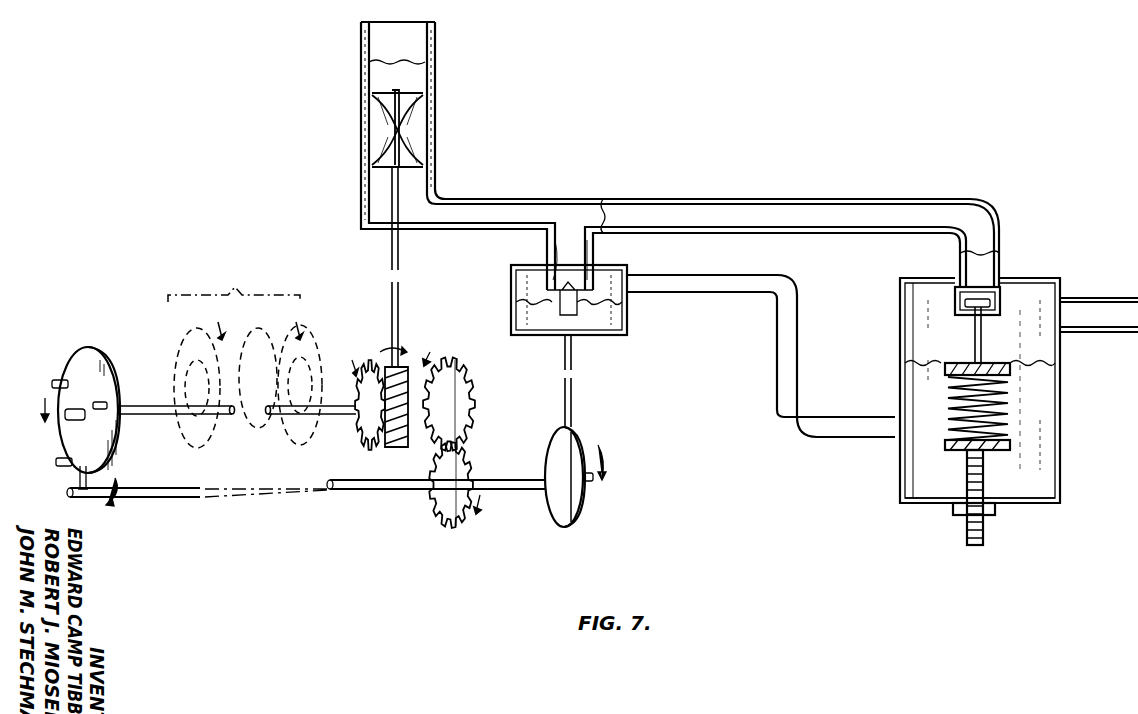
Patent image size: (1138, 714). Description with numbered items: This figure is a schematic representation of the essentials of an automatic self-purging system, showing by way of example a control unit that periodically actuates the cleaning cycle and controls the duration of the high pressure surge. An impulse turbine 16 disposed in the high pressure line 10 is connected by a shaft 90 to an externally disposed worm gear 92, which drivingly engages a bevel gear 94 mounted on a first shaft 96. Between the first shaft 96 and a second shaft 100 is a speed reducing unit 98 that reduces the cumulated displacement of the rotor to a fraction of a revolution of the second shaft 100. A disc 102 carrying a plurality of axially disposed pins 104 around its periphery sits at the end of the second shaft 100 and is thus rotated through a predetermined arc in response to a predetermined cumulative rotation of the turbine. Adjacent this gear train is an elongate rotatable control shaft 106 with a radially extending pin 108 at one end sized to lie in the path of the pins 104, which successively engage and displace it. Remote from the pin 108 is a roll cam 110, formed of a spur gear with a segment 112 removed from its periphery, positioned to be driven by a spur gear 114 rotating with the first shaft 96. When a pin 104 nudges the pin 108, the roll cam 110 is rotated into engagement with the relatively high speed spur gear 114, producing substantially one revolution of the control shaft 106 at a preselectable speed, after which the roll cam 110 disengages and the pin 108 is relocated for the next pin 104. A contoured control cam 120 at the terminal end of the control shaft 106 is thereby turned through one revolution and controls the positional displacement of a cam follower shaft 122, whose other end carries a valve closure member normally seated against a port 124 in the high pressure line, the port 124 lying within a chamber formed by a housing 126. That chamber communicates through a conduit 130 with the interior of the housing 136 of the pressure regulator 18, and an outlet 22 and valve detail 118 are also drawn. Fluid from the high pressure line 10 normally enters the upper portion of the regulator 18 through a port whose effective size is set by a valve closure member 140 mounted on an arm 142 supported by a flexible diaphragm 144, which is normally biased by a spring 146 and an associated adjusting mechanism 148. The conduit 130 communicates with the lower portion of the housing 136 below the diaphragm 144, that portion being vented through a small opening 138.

The high pressure line 10 is at (436, 93).
The impulse turbine 16 is at (421, 143).
The pressure regulator 18 is at (1062, 388).
The outlet pipe 22 is at (1090, 301).
The shaft 90 is at (392, 270).
The worm gear 92 is at (408, 440).
The bevel gear 94 is at (384, 368).
The first shaft 96 is at (336, 404).
The speed reducing unit 98 is at (245, 353).
The second shaft 100 is at (144, 404).
The disc 102 is at (92, 357).
The pins 104 is at (56, 383).
The control shaft 106 is at (156, 488).
The pin 108 is at (78, 490).
The roll cam 110 is at (464, 470).
The segment 112 is at (436, 500).
The spur gear 114 is at (468, 410).
The valve housing 118 is at (600, 300).
The control cam 120 is at (557, 512).
The cam follower shaft 122 is at (573, 400).
The port 124 is at (556, 262).
The housing 126 is at (608, 268).
The conduit 130 is at (797, 300).
The housing 136 is at (1050, 282).
The small opening 138 is at (1042, 514).
The valve closure member 140 is at (985, 292).
The arm 142 is at (985, 352).
The flexible diaphragm 144 is at (925, 368).
The spring 146 is at (1000, 414).
The adjusting mechanism 148 is at (985, 538).